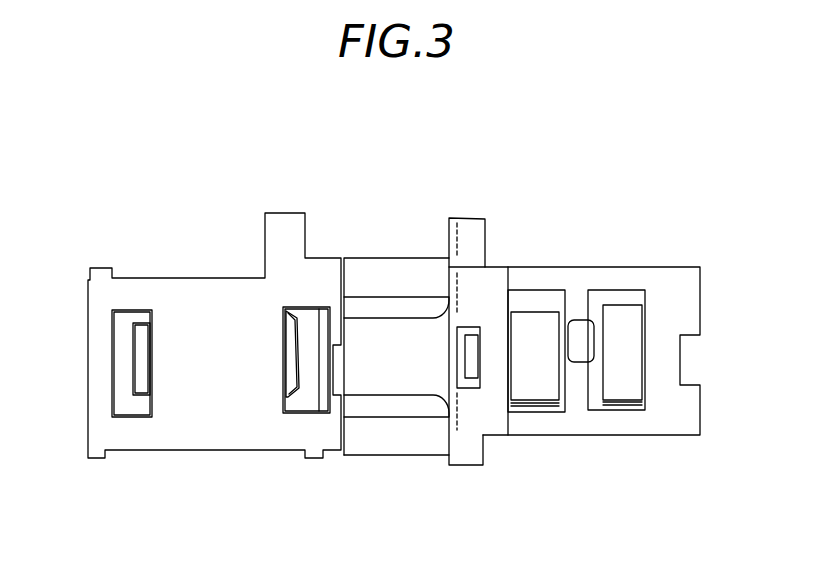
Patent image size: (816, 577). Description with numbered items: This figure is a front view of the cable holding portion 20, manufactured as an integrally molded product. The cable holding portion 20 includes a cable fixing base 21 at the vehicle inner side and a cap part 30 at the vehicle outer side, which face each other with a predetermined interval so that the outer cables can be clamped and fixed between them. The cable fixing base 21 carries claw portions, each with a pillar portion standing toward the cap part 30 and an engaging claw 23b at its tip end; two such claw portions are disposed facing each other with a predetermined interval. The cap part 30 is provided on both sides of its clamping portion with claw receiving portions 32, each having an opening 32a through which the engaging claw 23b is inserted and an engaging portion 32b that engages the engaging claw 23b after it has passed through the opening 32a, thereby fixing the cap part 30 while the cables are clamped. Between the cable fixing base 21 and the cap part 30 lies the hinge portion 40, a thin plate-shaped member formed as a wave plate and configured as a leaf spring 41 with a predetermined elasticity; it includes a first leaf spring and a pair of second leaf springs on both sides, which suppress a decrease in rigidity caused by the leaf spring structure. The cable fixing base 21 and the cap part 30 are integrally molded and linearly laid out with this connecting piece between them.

The cable holding portion 20 is at (406, 232).
The cable fixing base 21 is at (207, 312).
The engaging claw 23b is at (131, 357).
The cap part 30 is at (613, 267).
The claw receiving portion 32 is at (553, 287).
The opening 32a is at (537, 402).
The engaging portion 32b is at (510, 352).
The hinge portion 40 is at (383, 256).
The leaf spring 41 is at (370, 283).